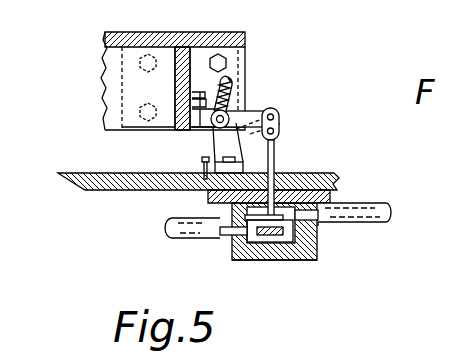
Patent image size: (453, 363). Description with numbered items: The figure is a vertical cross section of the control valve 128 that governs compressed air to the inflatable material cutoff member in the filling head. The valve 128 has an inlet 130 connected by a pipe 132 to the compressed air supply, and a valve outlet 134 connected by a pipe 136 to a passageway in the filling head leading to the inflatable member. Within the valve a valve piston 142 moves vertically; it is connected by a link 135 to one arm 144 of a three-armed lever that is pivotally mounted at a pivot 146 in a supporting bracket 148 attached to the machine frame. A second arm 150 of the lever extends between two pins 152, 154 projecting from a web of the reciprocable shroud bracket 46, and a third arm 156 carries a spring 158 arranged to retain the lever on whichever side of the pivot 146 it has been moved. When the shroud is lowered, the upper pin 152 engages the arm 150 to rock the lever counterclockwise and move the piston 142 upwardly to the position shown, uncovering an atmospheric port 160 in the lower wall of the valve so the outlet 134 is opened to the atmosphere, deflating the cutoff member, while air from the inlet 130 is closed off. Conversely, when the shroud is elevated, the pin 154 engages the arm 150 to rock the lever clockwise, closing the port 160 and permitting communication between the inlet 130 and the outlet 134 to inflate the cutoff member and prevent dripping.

The bracket 46 is at (152, 32).
The upper pin 152 is at (192, 94).
The second arm 150 is at (192, 103).
The pin 154 is at (212, 130).
The spring 158 is at (203, 157).
The third arm 156 is at (233, 93).
The pivot 146 is at (258, 108).
The first arm 144 is at (275, 108).
The link 135 is at (279, 120).
The supporting bracket 148 is at (240, 153).
The valve piston 142 is at (300, 196).
The pipe 132 is at (350, 203).
The inlet 130 is at (320, 224).
The pipe 136 is at (182, 240).
The valve outlet 134 is at (224, 260).
The atmospheric port 160 is at (270, 262).
The valve 128 is at (340, 273).